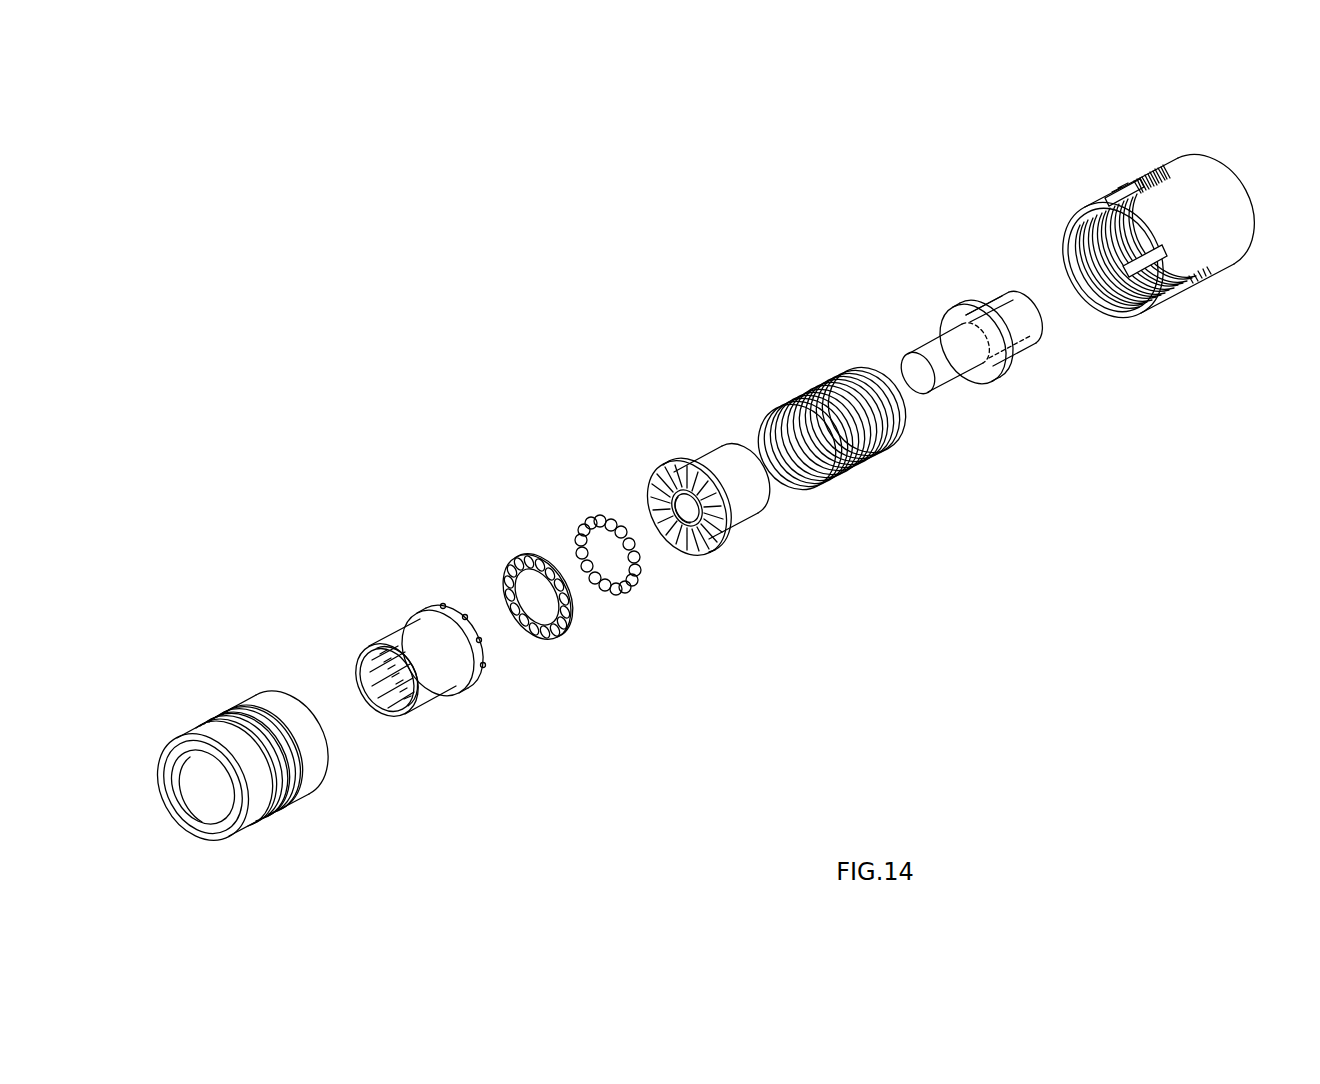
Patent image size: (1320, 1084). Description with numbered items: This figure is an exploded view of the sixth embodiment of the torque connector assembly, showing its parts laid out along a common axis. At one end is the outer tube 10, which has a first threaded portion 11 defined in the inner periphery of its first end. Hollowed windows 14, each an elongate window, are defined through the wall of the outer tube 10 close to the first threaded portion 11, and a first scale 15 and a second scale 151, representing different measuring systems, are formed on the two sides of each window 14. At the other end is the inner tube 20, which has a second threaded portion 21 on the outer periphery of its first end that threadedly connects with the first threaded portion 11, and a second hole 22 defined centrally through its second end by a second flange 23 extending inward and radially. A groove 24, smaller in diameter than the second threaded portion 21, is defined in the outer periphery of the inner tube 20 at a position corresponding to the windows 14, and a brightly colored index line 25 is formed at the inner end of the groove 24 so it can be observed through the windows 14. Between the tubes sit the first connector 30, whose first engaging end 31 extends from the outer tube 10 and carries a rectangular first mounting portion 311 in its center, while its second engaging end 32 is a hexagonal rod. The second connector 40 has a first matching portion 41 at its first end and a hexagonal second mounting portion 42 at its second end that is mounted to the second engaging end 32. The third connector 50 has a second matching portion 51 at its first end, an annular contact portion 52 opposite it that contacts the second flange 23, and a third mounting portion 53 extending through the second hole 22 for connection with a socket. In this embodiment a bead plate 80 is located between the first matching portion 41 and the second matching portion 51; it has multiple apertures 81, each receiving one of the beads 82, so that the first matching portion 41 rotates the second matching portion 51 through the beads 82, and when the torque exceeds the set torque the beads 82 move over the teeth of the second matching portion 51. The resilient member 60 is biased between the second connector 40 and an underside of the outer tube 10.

The outer tube 10 is at (1146, 232).
The first threaded portion 11 is at (1083, 230).
The hollowed windows 14 is at (1138, 197).
The first scale 15 is at (1123, 183).
The second scale 151 is at (1177, 187).
The inner tube 20 is at (244, 773).
The second threaded portion 21 is at (297, 792).
The second hole 22 is at (177, 783).
The second flange 23 is at (200, 817).
The groove 24 is at (283, 807).
The index line 25 is at (227, 712).
The first connector 30 is at (984, 342).
The first engaging end 31 is at (1035, 345).
The first mounting portion 311 is at (995, 295).
The second engaging end 32 is at (932, 347).
The second connector 40 is at (703, 523).
The first matching portion 41 is at (705, 550).
The second mounting portion 42 is at (683, 503).
The third connector 50 is at (427, 666).
The second matching portion 51 is at (472, 667).
The contact portion 52 is at (403, 620).
The third mounting portion 53 is at (362, 660).
The resilient member 60 is at (873, 457).
The bead plate 80 is at (537, 600).
The apertures 81 is at (512, 575).
The beads 82 is at (580, 527).